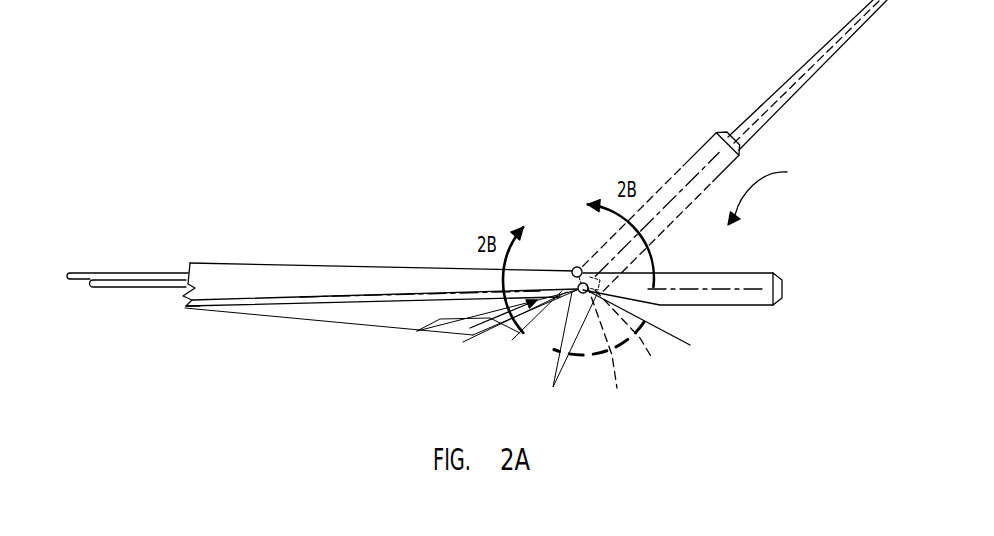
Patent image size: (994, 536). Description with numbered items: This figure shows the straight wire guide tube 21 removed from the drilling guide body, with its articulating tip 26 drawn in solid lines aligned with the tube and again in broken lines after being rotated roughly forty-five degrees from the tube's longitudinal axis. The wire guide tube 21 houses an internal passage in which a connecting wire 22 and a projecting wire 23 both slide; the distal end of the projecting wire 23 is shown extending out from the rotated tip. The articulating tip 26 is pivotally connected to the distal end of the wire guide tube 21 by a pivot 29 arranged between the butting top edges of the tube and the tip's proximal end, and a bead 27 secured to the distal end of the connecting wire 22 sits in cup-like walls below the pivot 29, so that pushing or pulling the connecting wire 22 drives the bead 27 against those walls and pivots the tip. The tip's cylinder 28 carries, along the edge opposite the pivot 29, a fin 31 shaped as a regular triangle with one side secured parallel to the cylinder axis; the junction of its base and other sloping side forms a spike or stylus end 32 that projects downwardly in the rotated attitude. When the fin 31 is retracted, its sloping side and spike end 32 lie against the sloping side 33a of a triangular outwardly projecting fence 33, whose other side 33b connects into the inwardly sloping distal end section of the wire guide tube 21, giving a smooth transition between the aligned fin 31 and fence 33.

The wire guide tube 21 is at (258, 265).
The connecting wire 22 is at (168, 290).
The projecting wire 23 is at (78, 271).
The articulating tip 26 is at (769, 192).
The bead 27 is at (515, 337).
The articulating tip cylinder 28 is at (724, 280).
The pivot 29 is at (573, 268).
The fin 31 is at (690, 345).
The spike or stylus end 32 is at (468, 323).
The fence 33 is at (397, 317).
The sloping side of fence 33a is at (427, 327).
The other fence side 33b is at (320, 318).